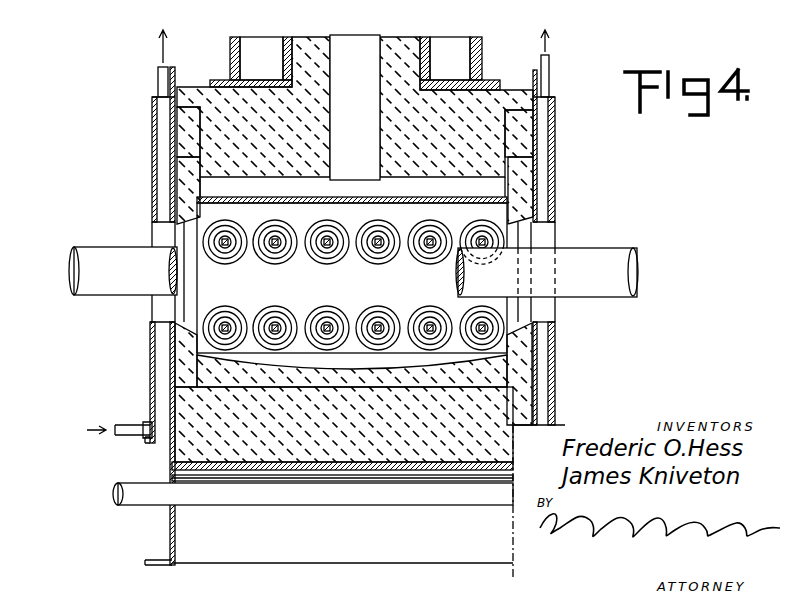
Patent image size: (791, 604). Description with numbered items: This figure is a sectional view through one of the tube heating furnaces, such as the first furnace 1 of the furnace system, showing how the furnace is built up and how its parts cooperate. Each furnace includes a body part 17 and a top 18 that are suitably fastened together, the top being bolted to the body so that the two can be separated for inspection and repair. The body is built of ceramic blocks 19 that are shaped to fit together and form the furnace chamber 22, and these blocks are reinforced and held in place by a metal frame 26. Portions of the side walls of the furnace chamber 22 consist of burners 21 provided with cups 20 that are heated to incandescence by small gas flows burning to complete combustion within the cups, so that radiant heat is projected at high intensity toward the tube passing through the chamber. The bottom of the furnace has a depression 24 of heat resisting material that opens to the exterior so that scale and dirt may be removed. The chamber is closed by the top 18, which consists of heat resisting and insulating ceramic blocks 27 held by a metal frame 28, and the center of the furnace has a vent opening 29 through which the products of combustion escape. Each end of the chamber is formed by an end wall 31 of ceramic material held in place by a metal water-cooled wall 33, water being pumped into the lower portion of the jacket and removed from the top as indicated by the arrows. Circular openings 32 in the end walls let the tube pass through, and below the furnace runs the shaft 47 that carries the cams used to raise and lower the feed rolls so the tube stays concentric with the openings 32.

The first furnace 1 is at (355, 105).
The body part 17 is at (243, 465).
The top 18 is at (230, 82).
The ceramic blocks 19 is at (413, 456).
The cups 20 is at (378, 236).
The burners 21 is at (225, 322).
The furnace chamber 22 is at (352, 278).
The depression 24 is at (403, 370).
The metal frame 26 is at (172, 474).
The ceramic blocks 27 is at (446, 98).
The metal frame 28 is at (428, 40).
The vent opening 29 is at (355, 107).
The end wall 31 is at (182, 189).
The circular openings 32 is at (161, 233).
The water-cooled wall 33 is at (156, 114).
The shaft 47 is at (148, 497).